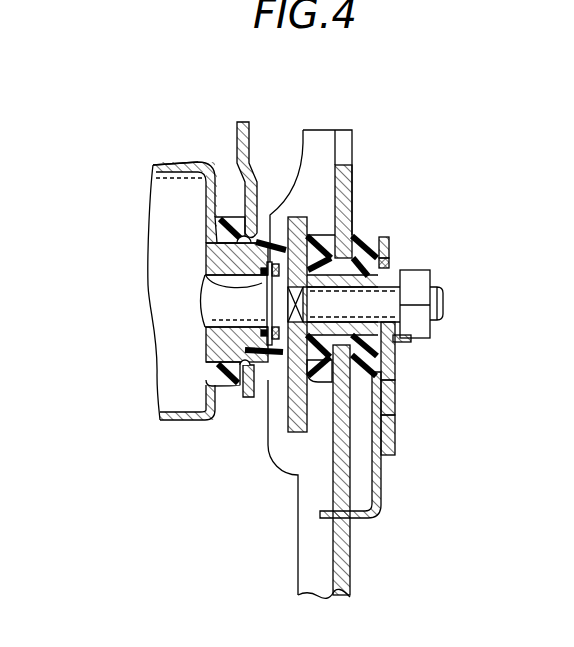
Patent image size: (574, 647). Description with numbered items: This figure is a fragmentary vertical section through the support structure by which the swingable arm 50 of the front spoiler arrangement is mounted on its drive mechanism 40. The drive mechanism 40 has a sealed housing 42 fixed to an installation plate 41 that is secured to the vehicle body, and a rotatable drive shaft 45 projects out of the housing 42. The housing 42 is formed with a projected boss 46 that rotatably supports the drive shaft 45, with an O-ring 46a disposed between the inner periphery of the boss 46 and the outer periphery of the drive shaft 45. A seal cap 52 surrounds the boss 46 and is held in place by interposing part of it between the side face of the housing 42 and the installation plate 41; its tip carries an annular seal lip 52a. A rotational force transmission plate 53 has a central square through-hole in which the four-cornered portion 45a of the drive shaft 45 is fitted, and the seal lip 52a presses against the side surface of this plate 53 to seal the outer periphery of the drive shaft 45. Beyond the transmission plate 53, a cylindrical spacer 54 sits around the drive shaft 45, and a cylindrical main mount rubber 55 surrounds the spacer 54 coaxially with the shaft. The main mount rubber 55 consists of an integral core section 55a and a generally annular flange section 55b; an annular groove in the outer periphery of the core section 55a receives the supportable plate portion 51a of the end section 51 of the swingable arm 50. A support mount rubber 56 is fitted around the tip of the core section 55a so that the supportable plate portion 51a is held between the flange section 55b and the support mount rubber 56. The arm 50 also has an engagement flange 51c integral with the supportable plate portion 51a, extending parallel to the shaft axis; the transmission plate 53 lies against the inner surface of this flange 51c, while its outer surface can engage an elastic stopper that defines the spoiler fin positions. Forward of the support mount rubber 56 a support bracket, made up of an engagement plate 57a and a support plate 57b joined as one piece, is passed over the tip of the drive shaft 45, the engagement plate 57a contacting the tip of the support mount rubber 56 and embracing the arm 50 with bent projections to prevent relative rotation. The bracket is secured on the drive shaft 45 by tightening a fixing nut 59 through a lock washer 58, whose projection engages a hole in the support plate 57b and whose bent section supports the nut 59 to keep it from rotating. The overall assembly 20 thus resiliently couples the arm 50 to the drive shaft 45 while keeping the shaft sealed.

The coupling device 20 is at (110, 271).
The front spoiler drive mechanism 40 is at (153, 208).
The installation plate 41 is at (250, 135).
The sealed housing 42 is at (172, 162).
The drive shaft 45 is at (393, 290).
The four-cornered portion 45a is at (290, 300).
The projected boss 46 is at (222, 343).
The O-ring 46a is at (208, 272).
The swingable arm 50 is at (369, 532).
The end section 51 is at (342, 453).
The supportable plate portion 51a is at (389, 397).
The engagement flange 51c is at (320, 143).
The seal cap 52 is at (227, 378).
The annular seal lip 52a is at (268, 365).
The rotational force transmission plate 53 is at (293, 432).
The cylindrical spacer 54 is at (323, 333).
The main mount rubber 55 is at (353, 177).
The core section 55a is at (389, 370).
The flange section 55b is at (323, 232).
The support mount rubber 56 is at (368, 235).
The engagement plate 57a is at (380, 487).
The support plate 57b is at (395, 415).
The lock washer 58 is at (410, 342).
The fixing nut 59 is at (430, 285).